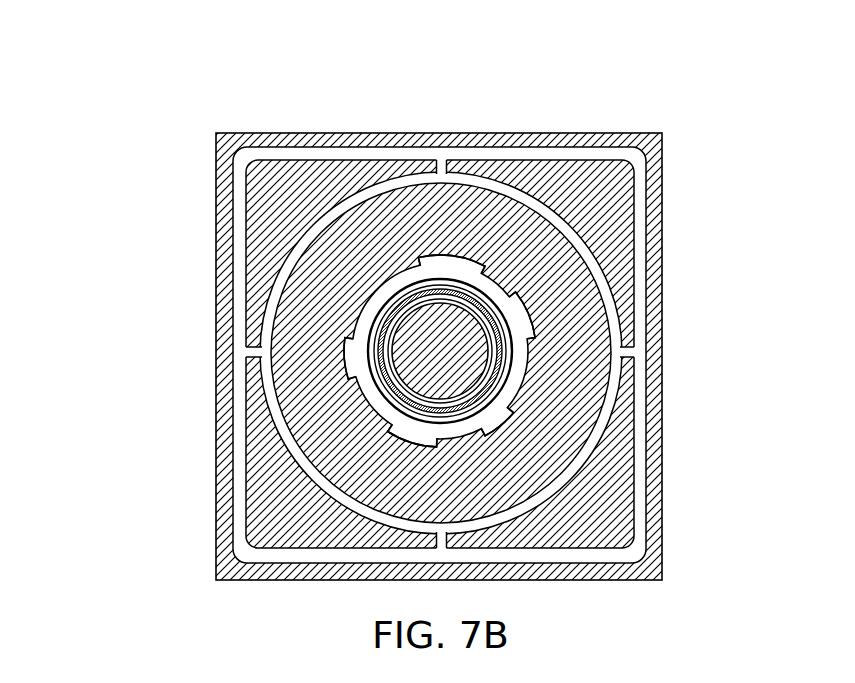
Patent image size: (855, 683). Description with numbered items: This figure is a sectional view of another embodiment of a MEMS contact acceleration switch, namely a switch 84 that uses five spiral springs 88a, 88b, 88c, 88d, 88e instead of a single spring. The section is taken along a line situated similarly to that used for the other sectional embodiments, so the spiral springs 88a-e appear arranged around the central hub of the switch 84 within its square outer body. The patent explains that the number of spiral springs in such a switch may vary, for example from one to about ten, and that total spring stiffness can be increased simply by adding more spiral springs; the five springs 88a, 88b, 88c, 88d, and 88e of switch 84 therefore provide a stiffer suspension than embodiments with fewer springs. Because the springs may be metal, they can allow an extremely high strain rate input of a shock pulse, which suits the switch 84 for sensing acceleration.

The switch 84 is at (713, 71).
The spiral spring 88a is at (483, 273).
The spiral spring 88b is at (510, 340).
The spiral spring 88c is at (488, 428).
The spiral spring 88d is at (378, 418).
The spiral spring 88e is at (380, 300).